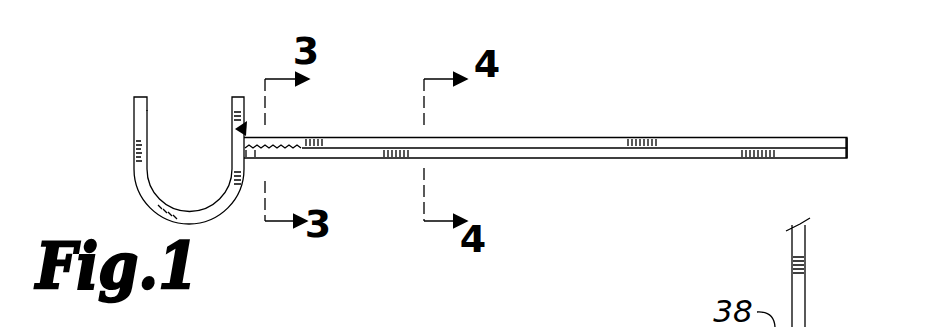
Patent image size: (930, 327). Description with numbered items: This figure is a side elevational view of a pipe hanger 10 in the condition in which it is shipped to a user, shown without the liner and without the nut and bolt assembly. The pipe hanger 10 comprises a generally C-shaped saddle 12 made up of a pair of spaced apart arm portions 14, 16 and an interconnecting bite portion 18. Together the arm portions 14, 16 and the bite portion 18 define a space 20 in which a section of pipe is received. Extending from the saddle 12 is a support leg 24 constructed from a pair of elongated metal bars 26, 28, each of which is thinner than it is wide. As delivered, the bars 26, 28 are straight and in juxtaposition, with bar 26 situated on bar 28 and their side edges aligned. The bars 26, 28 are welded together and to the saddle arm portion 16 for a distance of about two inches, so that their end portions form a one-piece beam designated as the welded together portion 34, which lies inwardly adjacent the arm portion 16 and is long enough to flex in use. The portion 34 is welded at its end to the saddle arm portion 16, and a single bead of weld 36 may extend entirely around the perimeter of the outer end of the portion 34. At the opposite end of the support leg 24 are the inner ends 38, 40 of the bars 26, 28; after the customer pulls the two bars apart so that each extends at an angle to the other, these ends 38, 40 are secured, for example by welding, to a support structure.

The pipe hanger 10 is at (127, 194).
The saddle 12 is at (222, 221).
The arm portion 14 is at (135, 142).
The arm portion 16 is at (247, 129).
The bite portion 18 is at (178, 223).
The space 20 is at (187, 155).
The support leg 24 is at (382, 163).
The elongated metal bar 26 is at (581, 137).
The elongated metal bar 28 is at (589, 159).
The welded together portion 34 is at (271, 161).
The bead of weld 36 is at (249, 168).
The inner end 38 is at (818, 136).
The inner end 40 is at (832, 160).